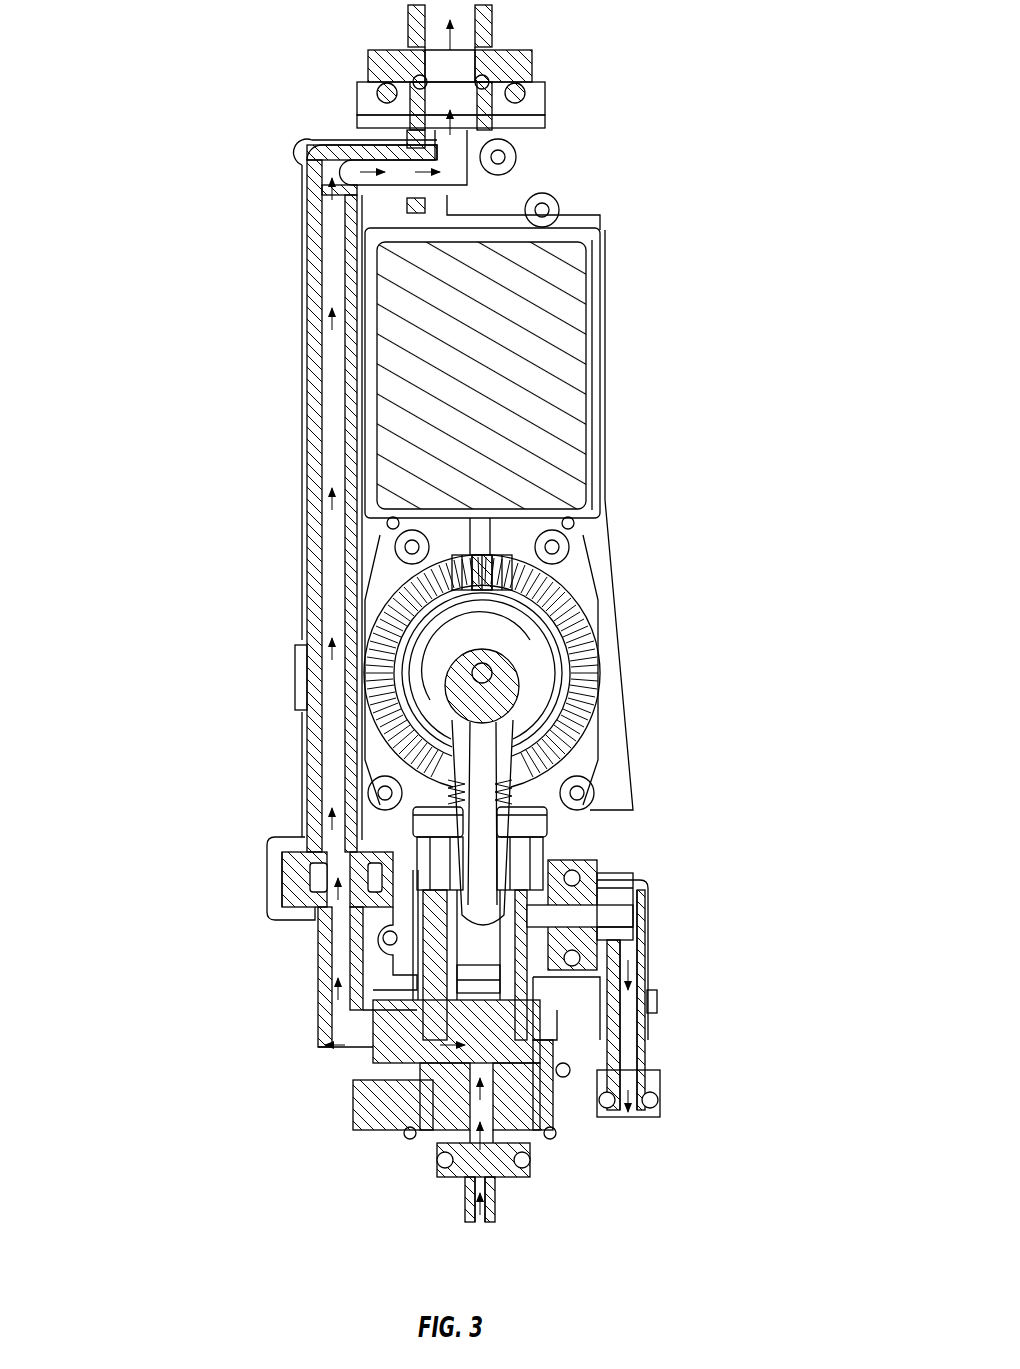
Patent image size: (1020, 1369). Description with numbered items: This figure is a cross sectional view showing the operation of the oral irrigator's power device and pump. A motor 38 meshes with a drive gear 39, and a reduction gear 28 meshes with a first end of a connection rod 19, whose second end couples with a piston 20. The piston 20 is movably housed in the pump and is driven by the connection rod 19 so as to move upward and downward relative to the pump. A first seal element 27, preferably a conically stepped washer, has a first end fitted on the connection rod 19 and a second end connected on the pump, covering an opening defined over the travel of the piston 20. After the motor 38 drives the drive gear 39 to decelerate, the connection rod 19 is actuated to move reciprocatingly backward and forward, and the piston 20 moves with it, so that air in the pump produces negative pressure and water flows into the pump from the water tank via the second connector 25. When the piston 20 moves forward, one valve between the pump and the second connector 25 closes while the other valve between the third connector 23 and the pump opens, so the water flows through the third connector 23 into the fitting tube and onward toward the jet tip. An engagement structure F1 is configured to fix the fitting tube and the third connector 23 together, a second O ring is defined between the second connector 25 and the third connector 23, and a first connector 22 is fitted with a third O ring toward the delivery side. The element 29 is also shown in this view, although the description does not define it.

The motor 38 is at (405, 375).
The drive gear 39 is at (450, 570).
The reduction gear 28 is at (565, 615).
The connection rod 19 is at (500, 737).
The first seal element 27 is at (540, 810).
The first connector 22 is at (603, 893).
The piston 20 is at (507, 980).
The outlet pipe 29 is at (655, 1028).
The engagement structure F1 is at (275, 897).
The third connector 23 is at (320, 1053).
The second connector 25 is at (445, 1166).